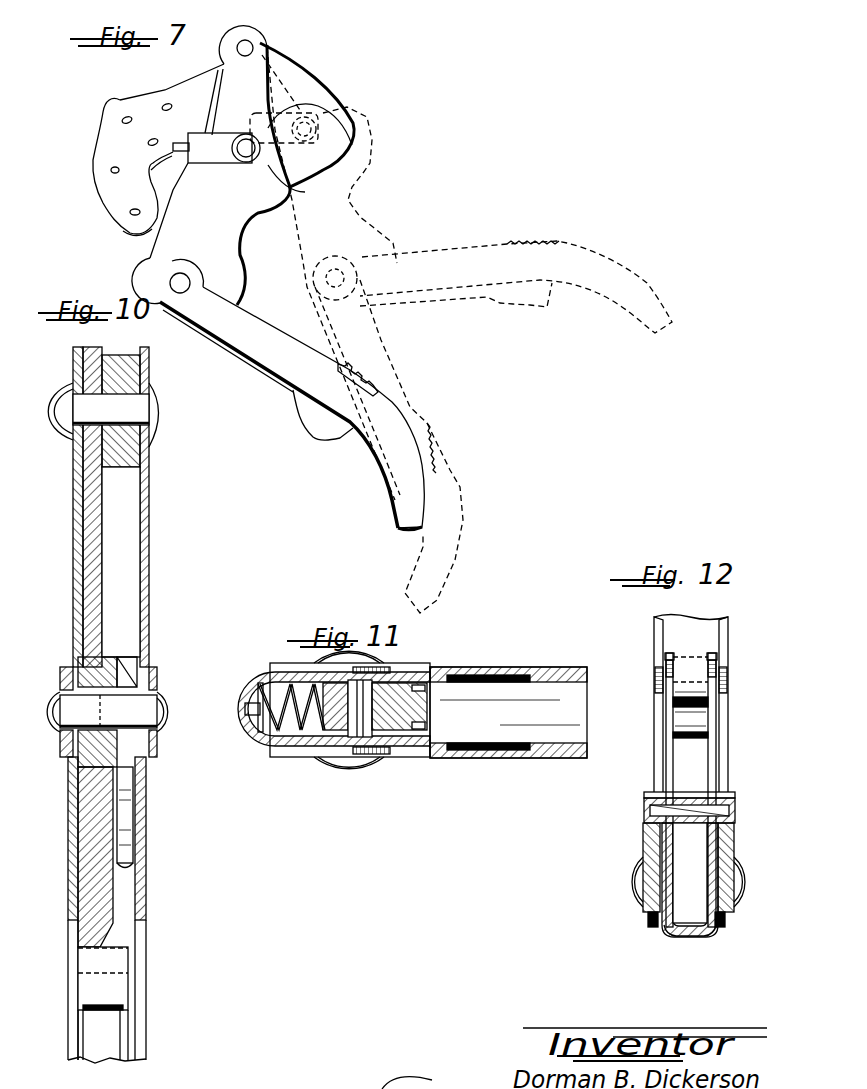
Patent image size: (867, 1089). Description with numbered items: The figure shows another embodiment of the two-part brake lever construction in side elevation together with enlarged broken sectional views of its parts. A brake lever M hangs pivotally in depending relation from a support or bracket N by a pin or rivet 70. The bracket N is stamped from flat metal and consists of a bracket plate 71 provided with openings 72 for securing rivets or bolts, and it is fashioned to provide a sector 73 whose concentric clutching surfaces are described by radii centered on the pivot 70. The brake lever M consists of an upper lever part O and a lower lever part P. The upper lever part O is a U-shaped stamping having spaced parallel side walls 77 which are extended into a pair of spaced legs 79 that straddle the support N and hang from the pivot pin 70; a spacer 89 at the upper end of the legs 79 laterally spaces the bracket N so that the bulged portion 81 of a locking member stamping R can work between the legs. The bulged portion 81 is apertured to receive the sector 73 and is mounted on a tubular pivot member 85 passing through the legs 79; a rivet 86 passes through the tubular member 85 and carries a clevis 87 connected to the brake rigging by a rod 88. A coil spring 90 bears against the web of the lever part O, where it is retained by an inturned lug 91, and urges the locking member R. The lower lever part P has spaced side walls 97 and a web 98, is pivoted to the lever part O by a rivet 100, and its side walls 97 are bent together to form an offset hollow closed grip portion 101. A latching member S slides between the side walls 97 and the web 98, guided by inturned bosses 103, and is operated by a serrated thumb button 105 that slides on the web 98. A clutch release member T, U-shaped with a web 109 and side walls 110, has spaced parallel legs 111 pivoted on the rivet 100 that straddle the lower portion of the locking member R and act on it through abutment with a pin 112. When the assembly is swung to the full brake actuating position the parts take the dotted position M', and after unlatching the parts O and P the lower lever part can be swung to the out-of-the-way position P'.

In FIG. 7, the pin or rivet 70 is at (265, 48).
In FIG. 10, the pin or rivet 70 is at (158, 408).
In FIG. 7, the bracket plate 71 is at (187, 81).
In FIG. 7, the openings 72 is at (153, 140).
In FIG. 10, the sector 73 is at (98, 817).
In FIG. 10, the side walls 77 is at (68, 832).
In FIG. 11, the side walls 77 is at (447, 670).
In FIG. 12, the side walls 77 is at (654, 738).
In FIG. 10, the spaced legs 79 is at (73, 536).
In FIG. 10, the bulged portion 81 is at (80, 890).
In FIG. 10, the tubular pivot member 85 is at (135, 677).
In FIG. 10, the rivet or pivot member 86 is at (167, 713).
In FIG. 7, the clevis 87 is at (197, 133).
In FIG. 10, the clevis 87 is at (63, 664).
In FIG. 7, the rod 88 is at (186, 142).
In FIG. 10, the spacer 89 is at (123, 355).
In FIG. 11, the coil spring 90 is at (273, 747).
In FIG. 11, the inturned lug 91 is at (240, 712).
In FIG. 12, the side walls 97 is at (643, 858).
In FIG. 12, the web 98 is at (688, 803).
In FIG. 7, the rivet or pivotal member 100 is at (181, 282).
In FIG. 11, the rivet or pivotal member 100 is at (340, 768).
In FIG. 12, the rivet or pivotal member 100 is at (745, 888).
In FIG. 7, the hollow closed grip portion 101 is at (396, 512).
In FIG. 12, the inturned portions or bosses 103 is at (650, 835).
In FIG. 7, the serrated thumb button 105 is at (363, 381).
In FIG. 12, the web 109 is at (693, 938).
In FIG. 12, the side walls 110 is at (693, 848).
In FIG. 11, the spaced parallel legs 111 is at (397, 677).
In FIG. 11, the pin 112 is at (366, 727).
In FIG. 12, the pin 112 is at (708, 642).
In FIG. 7, the support or bracket N is at (118, 200).
In FIG. 10, the support or bracket N is at (102, 520).
In FIG. 7, the upper lever part O is at (250, 268).
In FIG. 11, the upper lever part O is at (417, 672).
In FIG. 12, the upper lever part O is at (735, 712).
In FIG. 7, the brake lever M is at (279, 415).
In FIG. 7, the brake lever in full brake actuating position M' is at (492, 280).
In FIG. 7, the lower lever part P is at (313, 407).
In FIG. 7, the lower lever part in out-of-the-way position P' is at (365, 330).
In FIG. 10, the locking member stamping R is at (130, 933).
In FIG. 11, the locking member stamping R is at (337, 720).
In FIG. 12, the latching member S is at (699, 829).
In FIG. 12, the clutch release member T is at (713, 940).